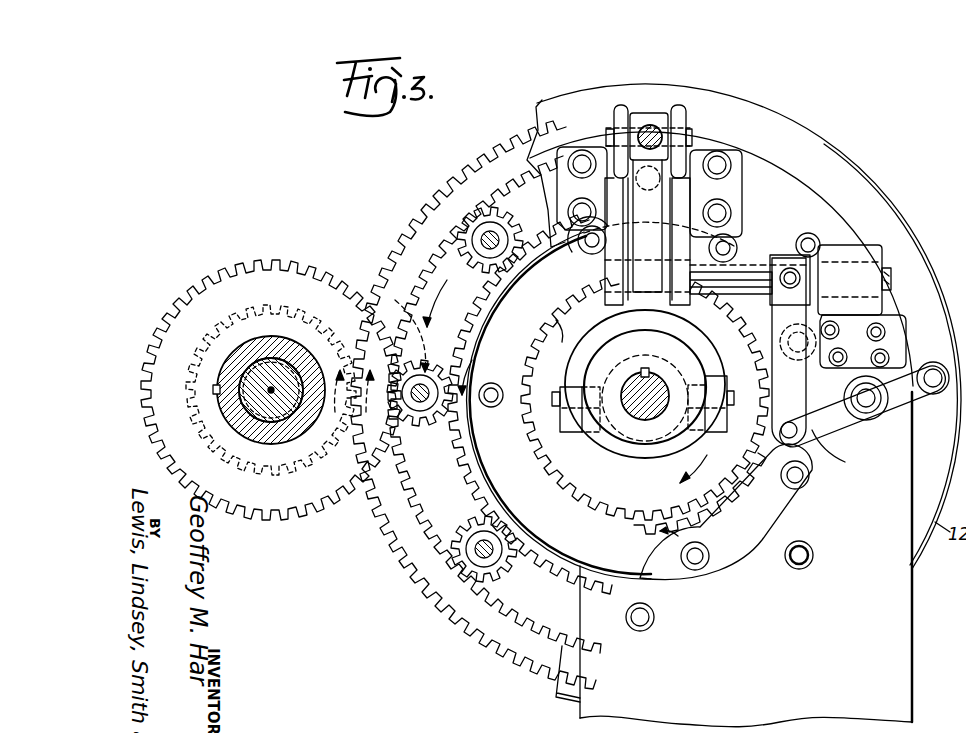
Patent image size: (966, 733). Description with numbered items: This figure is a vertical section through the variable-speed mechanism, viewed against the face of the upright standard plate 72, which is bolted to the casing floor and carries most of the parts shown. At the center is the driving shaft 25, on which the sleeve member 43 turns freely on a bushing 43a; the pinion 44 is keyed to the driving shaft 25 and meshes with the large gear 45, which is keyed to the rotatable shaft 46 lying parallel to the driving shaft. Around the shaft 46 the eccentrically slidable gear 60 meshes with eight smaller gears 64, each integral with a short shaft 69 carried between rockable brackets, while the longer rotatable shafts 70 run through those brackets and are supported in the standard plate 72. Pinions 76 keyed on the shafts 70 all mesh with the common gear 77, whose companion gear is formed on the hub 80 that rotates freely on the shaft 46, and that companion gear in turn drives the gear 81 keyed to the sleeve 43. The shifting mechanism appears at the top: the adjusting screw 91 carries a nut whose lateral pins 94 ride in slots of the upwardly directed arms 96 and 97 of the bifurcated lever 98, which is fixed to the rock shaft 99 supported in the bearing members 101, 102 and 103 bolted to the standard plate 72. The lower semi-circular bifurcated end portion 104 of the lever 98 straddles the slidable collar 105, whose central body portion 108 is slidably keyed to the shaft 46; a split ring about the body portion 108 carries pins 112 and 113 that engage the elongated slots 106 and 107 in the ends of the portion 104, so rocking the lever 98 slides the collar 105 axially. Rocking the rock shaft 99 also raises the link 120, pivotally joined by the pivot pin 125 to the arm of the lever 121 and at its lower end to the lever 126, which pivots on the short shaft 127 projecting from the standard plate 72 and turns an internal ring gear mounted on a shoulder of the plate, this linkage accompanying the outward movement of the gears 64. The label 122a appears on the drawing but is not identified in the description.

The driving shaft 25 is at (272, 395).
The sleeve member 43 is at (242, 356).
The bushing 43a is at (270, 365).
The pinion 44 is at (327, 330).
The large gear 45 is at (413, 222).
The rotatable shaft 46 is at (652, 420).
The eccentrically slidable gear 60 is at (556, 332).
The smaller gears 64 is at (585, 295).
The short shafts 69 is at (586, 262).
The rotatable shafts 70 is at (480, 240).
The standard plate 72 is at (905, 614).
The pinions 76 is at (470, 312).
The common gear 77 is at (470, 330).
The sleeve or hub 80 is at (432, 292).
The gear 81 is at (338, 284).
The adjusting screw 91 is at (650, 126).
The pins 94 is at (690, 137).
The arm 96 is at (682, 108).
The arm 97 is at (625, 108).
The bifurcated lever member 98 is at (665, 205).
The rock shaft 99 is at (892, 278).
The bearing member 101 is at (732, 152).
The bearing member 102 is at (598, 148).
The bearing member 103 is at (866, 248).
The semi-circular bifurcated end portion 104 is at (698, 340).
The slidable collar 105 is at (618, 457).
The elongated slot 106 is at (710, 417).
The elongated slot 107 is at (583, 432).
The central body portion 108 is at (718, 432).
The pin 112 is at (731, 391).
The pin 113 is at (553, 396).
The link 120 is at (712, 384).
The lever 121 is at (782, 272).
The lever 122a is at (790, 268).
The pivot pin 125 is at (760, 294).
The lever 126 is at (838, 448).
The short shaft 127 is at (870, 418).